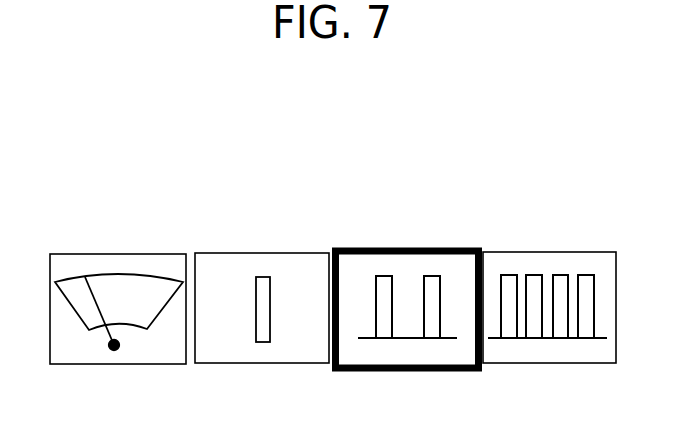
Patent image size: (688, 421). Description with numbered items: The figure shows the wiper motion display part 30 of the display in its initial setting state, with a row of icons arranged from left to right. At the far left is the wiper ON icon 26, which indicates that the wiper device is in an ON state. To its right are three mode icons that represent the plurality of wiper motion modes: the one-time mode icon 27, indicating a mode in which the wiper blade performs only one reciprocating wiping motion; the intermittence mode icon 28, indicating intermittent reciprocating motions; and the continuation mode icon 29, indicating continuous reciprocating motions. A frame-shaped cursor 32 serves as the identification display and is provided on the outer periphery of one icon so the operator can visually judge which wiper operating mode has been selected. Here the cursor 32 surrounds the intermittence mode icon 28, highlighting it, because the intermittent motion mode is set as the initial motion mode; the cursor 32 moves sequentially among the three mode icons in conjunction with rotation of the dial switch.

The wiper ON icon 26 is at (72, 272).
The one-time mode icon 27 is at (243, 273).
The intermittence mode icon 28 is at (367, 273).
The continuation mode icon 29 is at (548, 273).
The wiper motion display part 30 is at (157, 200).
The cursor 32 is at (445, 248).